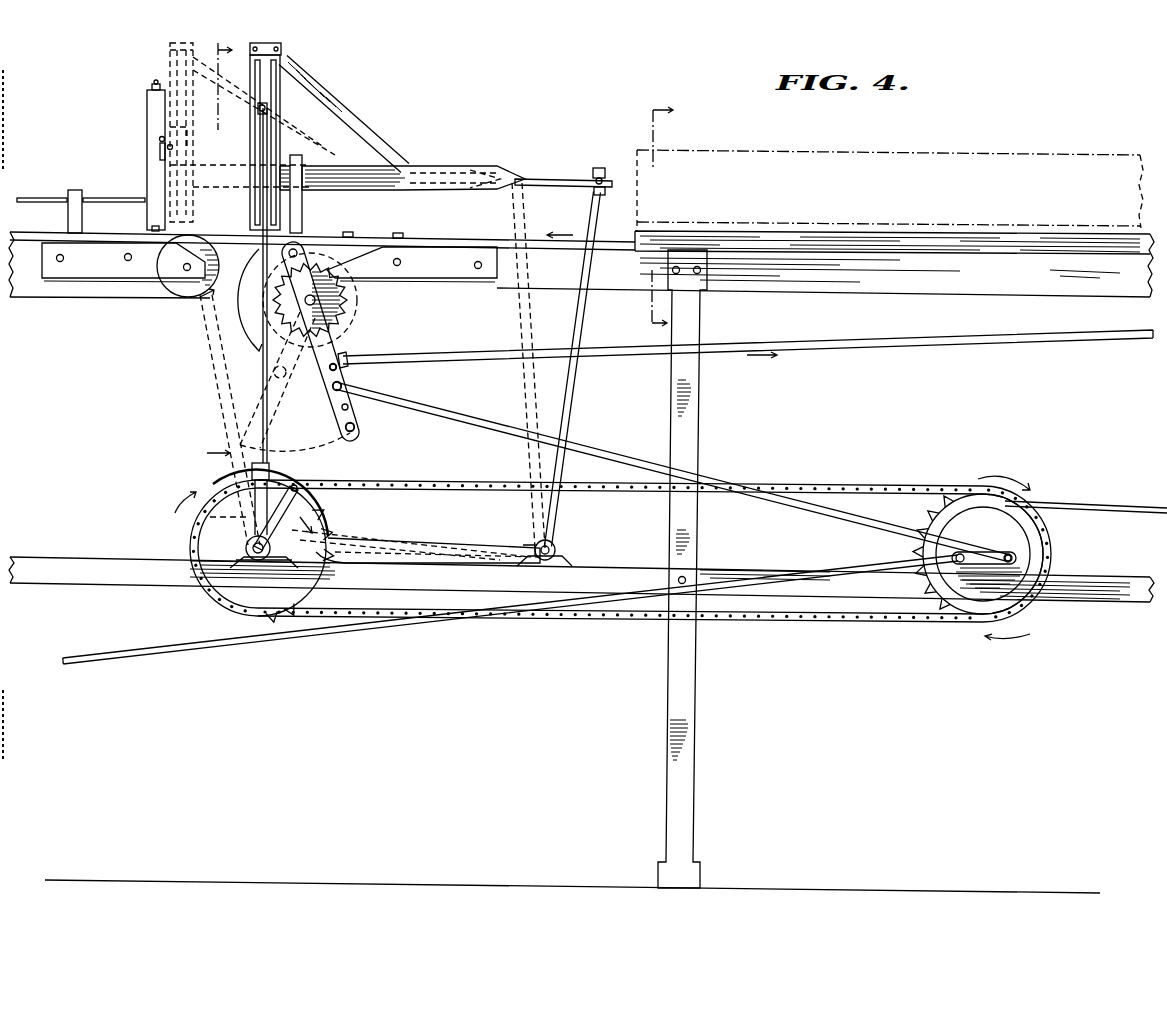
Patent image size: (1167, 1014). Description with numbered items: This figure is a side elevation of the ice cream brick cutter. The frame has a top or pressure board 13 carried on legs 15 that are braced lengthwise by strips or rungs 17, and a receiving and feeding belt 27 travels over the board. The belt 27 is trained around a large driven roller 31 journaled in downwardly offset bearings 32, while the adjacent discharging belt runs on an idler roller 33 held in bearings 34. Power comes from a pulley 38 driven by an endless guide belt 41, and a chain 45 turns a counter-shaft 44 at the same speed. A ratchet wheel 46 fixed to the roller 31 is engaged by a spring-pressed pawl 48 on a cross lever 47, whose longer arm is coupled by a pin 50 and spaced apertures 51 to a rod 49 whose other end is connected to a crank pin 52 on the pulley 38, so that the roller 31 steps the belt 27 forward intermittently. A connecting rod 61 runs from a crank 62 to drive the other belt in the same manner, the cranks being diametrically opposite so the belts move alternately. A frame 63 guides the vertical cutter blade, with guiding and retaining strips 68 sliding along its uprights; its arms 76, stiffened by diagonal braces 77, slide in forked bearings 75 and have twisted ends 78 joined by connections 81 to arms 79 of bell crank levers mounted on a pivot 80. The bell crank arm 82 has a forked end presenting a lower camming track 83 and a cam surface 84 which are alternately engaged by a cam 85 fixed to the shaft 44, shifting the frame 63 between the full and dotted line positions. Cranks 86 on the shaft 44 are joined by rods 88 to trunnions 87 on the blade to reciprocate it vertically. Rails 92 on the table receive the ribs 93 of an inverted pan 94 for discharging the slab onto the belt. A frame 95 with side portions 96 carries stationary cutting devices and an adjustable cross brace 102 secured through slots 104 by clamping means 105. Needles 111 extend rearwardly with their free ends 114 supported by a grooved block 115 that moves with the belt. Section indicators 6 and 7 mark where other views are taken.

The section line 6- 6 is at (218, 255).
The section line 7- 7 is at (664, 216).
The top or pressure board 13 is at (1010, 292).
The legs 15 is at (706, 426).
The strips or rungs 17 is at (1126, 603).
The receiving and feeding belt 27 is at (488, 242).
The driven roller 31 is at (350, 312).
The bearings 32 is at (370, 290).
The idler roller 33 is at (185, 300).
The bearings 34 is at (165, 283).
The pulley 38 is at (1020, 527).
The endless guide belt 41 is at (1136, 508).
The counter-shaft 44 is at (190, 528).
The chain 45 is at (826, 480).
The ratchet wheel 46 is at (345, 350).
The cross lever 47 is at (350, 368).
The spring-pressed pawl 48 is at (295, 255).
The rod 49 is at (400, 400).
The pin 50 is at (330, 390).
The spaced apertures 51 is at (355, 427).
The crank pin 52 is at (1013, 558).
The connecting rod 61 is at (225, 654).
The crank 62 is at (963, 565).
The frame 63 is at (282, 50).
The guiding and retaining strips 68 is at (256, 150).
The slotted or forked bearings 75 is at (304, 195).
The arms 76 is at (400, 193).
The diagonal braces 77 is at (350, 125).
The twisted ends 78 is at (550, 180).
The arms of bell crank levers 79 is at (575, 393).
The pivot 80 is at (575, 545).
The connections 81 is at (610, 178).
The horizontally extending arm 82 is at (428, 548).
The lower camming track 83 is at (195, 583).
The cam surface 84 is at (268, 470).
The cam 85 is at (280, 507).
The cranks 86 is at (235, 510).
The trunnions 87 is at (268, 108).
The rods 88 is at (263, 378).
The rails 92 is at (1010, 248).
The stops or ribs 93 is at (905, 224).
The pan 94 is at (918, 153).
The frame 95 is at (147, 74).
The side portions 96 is at (152, 118).
The cross brace 102 is at (174, 149).
The slots 104 is at (158, 158).
The securing and clamping means 105 is at (158, 140).
The needles or wires 111 is at (52, 198).
The free ends 114 is at (135, 198).
The grooved block 115 is at (83, 221).